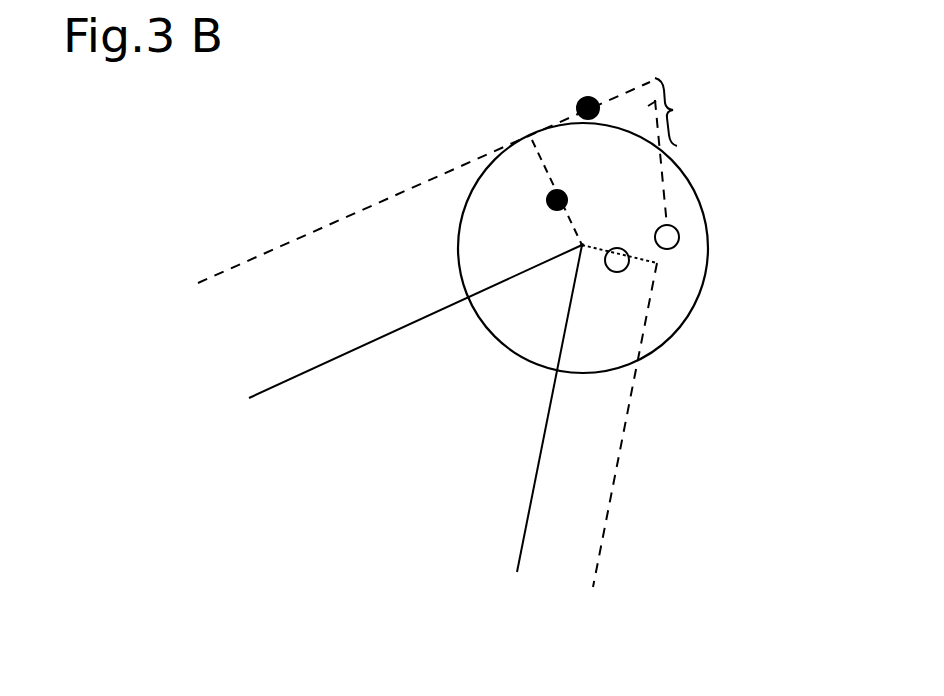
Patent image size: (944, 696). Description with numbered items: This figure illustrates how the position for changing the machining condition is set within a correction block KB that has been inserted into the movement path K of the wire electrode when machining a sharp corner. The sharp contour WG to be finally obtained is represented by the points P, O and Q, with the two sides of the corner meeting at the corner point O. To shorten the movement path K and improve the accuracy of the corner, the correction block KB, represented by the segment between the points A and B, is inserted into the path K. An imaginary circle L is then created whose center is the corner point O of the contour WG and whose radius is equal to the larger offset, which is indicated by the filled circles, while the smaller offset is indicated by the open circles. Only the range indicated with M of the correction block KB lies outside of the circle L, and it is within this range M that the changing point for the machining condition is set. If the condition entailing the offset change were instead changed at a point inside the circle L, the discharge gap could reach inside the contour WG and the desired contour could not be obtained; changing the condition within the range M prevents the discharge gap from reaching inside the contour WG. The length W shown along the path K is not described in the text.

The point A is at (430, 157).
The correction block KB is at (672, 93).
The range M is at (676, 112).
The point B is at (589, 248).
The imaginary circle L is at (708, 272).
The movement path K is at (330, 230).
The point O is at (605, 206).
The point P is at (396, 346).
The point Q is at (538, 429).
The sharp contour WG is at (385, 342).
The width W is at (510, 487).